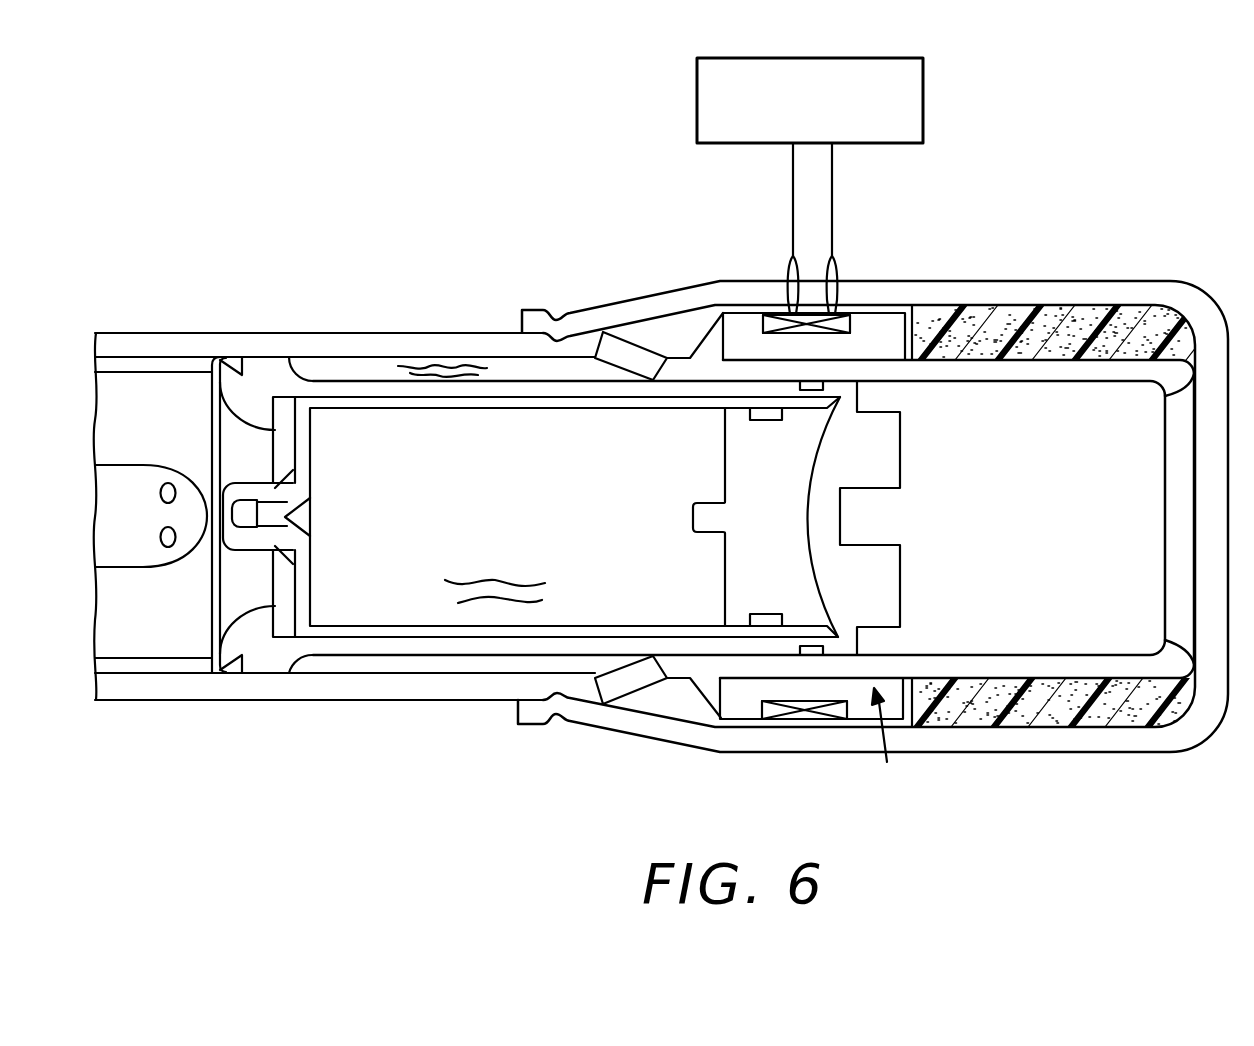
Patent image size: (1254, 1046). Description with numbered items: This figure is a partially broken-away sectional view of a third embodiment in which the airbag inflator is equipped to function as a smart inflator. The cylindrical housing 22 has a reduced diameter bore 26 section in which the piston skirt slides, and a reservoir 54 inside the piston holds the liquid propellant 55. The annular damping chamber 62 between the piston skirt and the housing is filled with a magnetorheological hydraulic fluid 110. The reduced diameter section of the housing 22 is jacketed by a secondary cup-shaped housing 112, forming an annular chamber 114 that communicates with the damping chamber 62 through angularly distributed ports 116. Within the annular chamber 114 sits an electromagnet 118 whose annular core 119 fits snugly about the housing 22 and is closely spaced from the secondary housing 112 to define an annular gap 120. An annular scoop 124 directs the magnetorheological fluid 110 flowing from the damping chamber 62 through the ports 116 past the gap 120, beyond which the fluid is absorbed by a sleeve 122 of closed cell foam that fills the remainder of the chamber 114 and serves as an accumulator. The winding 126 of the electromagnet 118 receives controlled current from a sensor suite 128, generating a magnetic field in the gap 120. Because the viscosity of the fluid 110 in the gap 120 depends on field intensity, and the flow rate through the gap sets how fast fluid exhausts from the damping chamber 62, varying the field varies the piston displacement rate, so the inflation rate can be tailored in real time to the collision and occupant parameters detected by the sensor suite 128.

The cylindrical housing 22 is at (207, 347).
The small diameter bore 26 is at (1010, 643).
The reservoir 54 is at (530, 515).
The liquid propellant 55 is at (487, 605).
The annular damping chamber 62 is at (342, 665).
The magnetorheological hydraulic fluid 110 is at (437, 370).
The secondary cup-shaped housing 112 is at (960, 292).
The annular chamber 114 is at (1103, 700).
The ports 116 is at (628, 355).
The electromagnet 118 is at (890, 745).
The annular core 119 is at (748, 688).
The annular gap 120 is at (827, 719).
The sleeve 122 is at (1085, 318).
The annular scoop 124 is at (693, 708).
The winding 126 is at (843, 318).
The sensor suite 128 is at (922, 85).